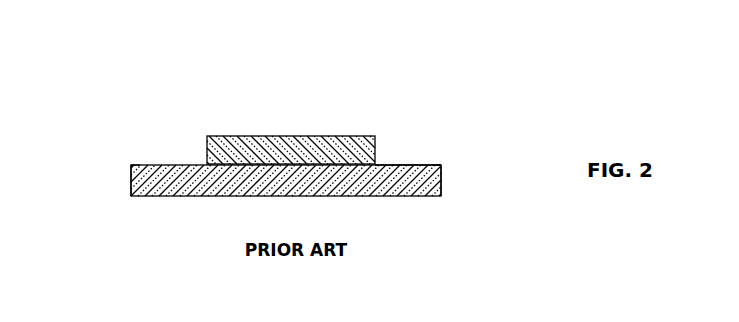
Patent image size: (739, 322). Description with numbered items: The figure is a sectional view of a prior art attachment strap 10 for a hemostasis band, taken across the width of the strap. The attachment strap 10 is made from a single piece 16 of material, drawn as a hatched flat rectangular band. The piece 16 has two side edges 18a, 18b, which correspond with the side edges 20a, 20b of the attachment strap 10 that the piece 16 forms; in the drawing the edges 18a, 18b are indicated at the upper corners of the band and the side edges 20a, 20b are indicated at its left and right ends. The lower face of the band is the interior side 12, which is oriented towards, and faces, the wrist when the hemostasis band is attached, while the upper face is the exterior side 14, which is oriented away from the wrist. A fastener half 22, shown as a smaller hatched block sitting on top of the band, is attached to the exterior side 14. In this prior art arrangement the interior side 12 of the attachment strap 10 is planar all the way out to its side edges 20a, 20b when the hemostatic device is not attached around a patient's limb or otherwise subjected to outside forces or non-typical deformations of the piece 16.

The attachment strap 10 is at (92, 94).
The interior side 12 is at (398, 197).
The exterior side 14 is at (388, 164).
The piece of material 16 is at (173, 183).
The side edge of piece 18a is at (131, 171).
The side edge of piece 18b is at (443, 172).
The side edge of attachment strap 20a is at (131, 187).
The side edge of attachment strap 20b is at (442, 188).
The fastener half 22 is at (270, 150).